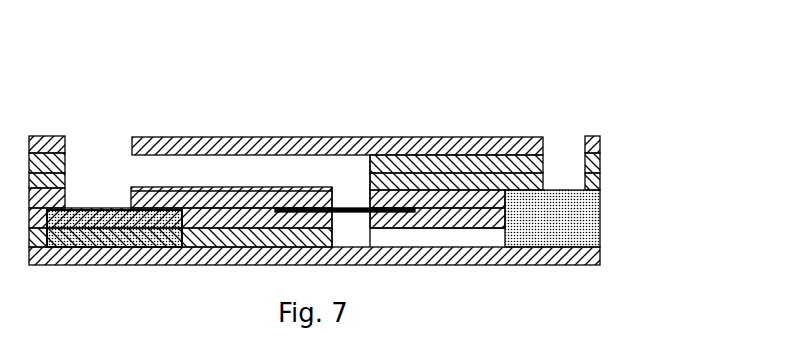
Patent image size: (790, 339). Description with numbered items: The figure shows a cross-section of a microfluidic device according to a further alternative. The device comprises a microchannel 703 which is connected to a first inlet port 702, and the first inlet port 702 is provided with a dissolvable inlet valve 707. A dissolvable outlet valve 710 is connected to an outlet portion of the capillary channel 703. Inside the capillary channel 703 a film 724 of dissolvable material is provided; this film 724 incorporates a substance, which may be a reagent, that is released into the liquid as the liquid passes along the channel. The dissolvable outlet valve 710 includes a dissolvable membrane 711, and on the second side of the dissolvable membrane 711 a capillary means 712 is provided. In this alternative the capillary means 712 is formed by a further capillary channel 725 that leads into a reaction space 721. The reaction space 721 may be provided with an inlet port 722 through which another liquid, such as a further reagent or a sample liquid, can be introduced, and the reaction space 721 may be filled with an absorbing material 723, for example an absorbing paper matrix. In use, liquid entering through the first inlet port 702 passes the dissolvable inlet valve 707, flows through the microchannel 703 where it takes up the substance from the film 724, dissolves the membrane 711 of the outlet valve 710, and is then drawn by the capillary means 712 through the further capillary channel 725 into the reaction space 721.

The first inlet port 702 is at (95, 145).
The microchannel 703 is at (178, 170).
The dissolvable inlet valve 707 is at (95, 210).
The dissolvable outlet valve 710 is at (355, 210).
The dissolvable membrane 711 is at (359, 210).
The capillary means 712 is at (443, 232).
The reaction space 721 is at (550, 240).
The inlet port 722 is at (560, 170).
The absorbing material 723 is at (558, 218).
The film 724 is at (270, 187).
The further capillary channel 725 is at (372, 228).